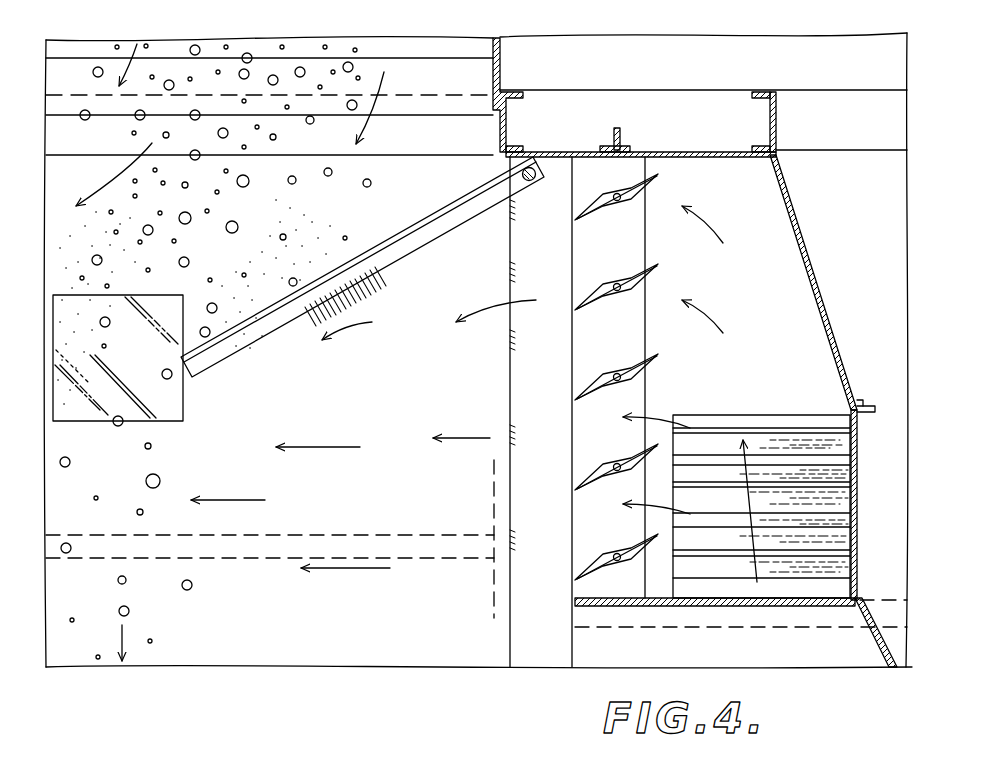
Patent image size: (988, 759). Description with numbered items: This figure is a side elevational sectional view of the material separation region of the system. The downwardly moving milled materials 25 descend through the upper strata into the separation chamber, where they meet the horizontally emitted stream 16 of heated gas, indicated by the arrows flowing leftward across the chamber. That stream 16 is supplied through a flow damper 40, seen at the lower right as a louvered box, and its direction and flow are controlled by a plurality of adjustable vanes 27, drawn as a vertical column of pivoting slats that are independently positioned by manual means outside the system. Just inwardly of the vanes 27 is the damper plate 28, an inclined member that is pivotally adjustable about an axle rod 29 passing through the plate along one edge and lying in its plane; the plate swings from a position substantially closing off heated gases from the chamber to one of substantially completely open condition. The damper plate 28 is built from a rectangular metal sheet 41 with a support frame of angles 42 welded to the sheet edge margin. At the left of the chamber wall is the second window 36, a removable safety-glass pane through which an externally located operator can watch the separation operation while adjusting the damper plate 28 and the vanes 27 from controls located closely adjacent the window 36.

The horizontally emitted stream of heated gas 16 is at (368, 324).
The downwardly moving milled materials 25 is at (350, 68).
The adjustable vanes 27 is at (632, 206).
The damper plate 28 is at (262, 352).
The axle rod 29 is at (548, 159).
The second window 36 is at (162, 399).
The flow damper 40 is at (780, 418).
The rectangular metal sheet 41 is at (451, 206).
The angles 42 is at (408, 257).